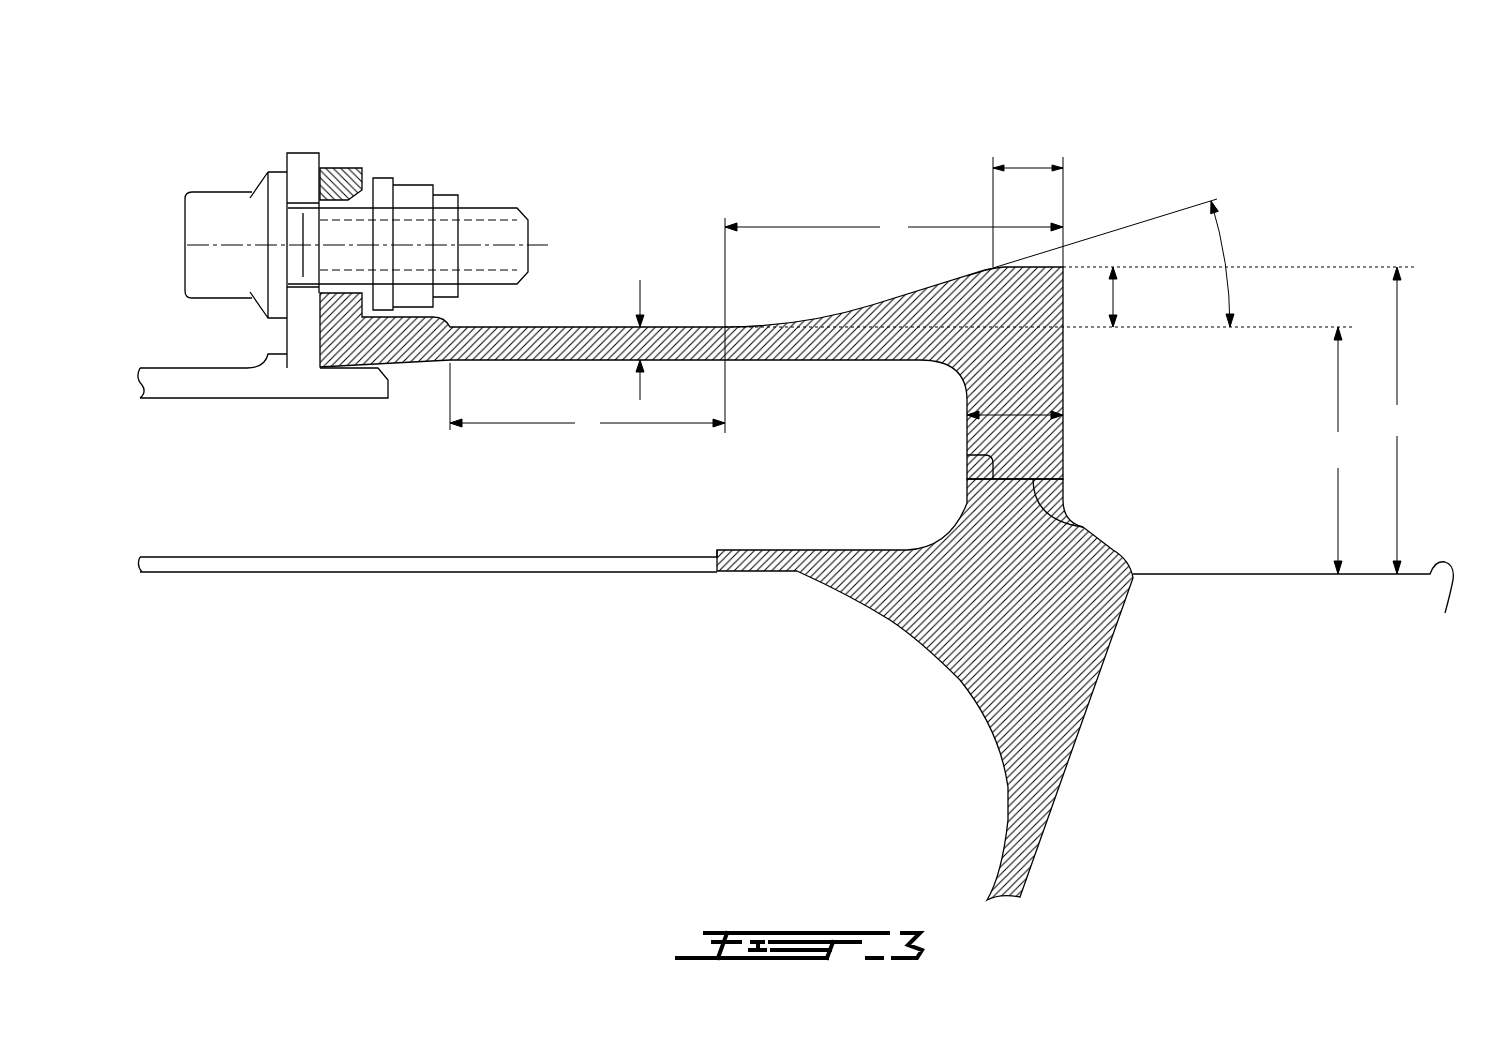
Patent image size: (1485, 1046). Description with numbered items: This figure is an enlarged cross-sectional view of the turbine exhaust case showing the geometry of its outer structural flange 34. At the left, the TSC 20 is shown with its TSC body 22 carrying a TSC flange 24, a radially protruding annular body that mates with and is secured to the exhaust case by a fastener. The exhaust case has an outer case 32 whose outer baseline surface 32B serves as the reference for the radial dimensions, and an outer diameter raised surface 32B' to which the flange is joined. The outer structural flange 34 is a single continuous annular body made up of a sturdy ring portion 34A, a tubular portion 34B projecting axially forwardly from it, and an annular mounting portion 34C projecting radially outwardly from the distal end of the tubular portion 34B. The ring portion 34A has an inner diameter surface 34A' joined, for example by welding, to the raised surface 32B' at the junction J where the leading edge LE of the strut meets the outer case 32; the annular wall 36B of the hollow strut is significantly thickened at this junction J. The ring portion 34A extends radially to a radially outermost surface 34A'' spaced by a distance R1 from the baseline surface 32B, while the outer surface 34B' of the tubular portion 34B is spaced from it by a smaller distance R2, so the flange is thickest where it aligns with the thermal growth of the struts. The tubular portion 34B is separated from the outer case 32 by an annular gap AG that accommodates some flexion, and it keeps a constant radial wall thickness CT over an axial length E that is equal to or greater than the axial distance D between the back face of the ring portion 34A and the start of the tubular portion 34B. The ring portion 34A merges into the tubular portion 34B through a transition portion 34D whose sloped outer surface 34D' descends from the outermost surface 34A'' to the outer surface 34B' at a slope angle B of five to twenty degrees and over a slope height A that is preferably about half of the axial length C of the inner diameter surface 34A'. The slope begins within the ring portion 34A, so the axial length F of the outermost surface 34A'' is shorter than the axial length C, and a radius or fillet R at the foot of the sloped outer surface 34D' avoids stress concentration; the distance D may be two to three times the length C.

The TSC 20 is at (178, 415).
The TSC body 22 is at (157, 383).
The TSC flange 24 is at (262, 136).
The outer case 32 is at (433, 573).
The outer baseline surface 32B is at (1302, 605).
The outer diameter raised surface 32B' is at (915, 465).
The outer structural flange 34 is at (691, 261).
The ring portion 34A is at (951, 373).
The inner diameter surface 34A' is at (1148, 509).
The radially outermost surface 34A'' is at (1009, 189).
The tubular portion 34B is at (685, 269).
The outer surface 34B' is at (545, 390).
The annular mounting portion 34C is at (347, 172).
The transition portion 34D is at (928, 239).
The sloped outer surface 34D' is at (801, 240).
The annular wall 36B is at (1030, 827).
The leading edge LE is at (998, 858).
The junction J is at (930, 667).
The slope height A is at (1123, 297).
The slope angle B is at (1104, 263).
The axial length C is at (1020, 413).
The axial distance D is at (894, 295).
The axial length E is at (587, 401).
The axial length F is at (1028, 201).
The radius or fillet R is at (772, 327).
The distance R1 is at (1397, 420).
The distance R2 is at (1339, 450).
The constant radial wall thickness CT is at (643, 325).
The annular gap AG is at (690, 481).